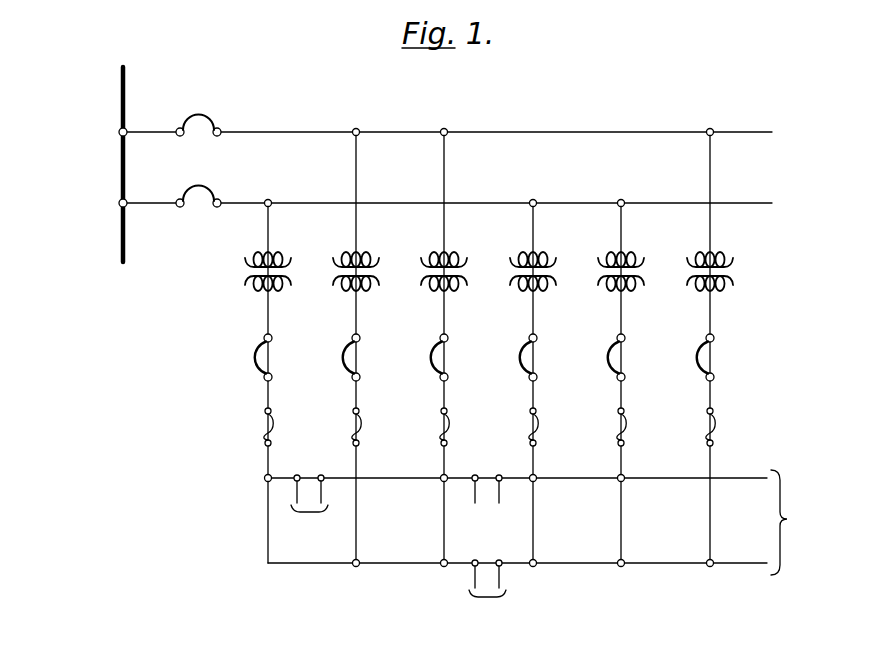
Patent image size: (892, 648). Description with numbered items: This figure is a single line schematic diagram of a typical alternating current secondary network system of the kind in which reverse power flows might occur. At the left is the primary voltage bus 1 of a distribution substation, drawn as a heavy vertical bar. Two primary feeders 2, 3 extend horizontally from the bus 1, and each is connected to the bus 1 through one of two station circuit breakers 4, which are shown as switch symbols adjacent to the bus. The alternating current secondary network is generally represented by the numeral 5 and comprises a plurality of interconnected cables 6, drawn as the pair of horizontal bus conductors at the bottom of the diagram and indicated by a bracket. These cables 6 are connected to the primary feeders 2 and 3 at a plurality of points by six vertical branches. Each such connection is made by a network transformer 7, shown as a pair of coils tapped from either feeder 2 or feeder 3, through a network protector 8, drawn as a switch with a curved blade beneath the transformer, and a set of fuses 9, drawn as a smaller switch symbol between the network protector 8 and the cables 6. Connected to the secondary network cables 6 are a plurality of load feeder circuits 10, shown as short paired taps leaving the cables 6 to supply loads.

The primary voltage bus 1 is at (122, 167).
The primary feeder 2 is at (318, 130).
The primary feeder 3 is at (318, 201).
The station circuit breaker 4 is at (196, 150).
The alternating current secondary network 5 is at (406, 527).
The interconnected cables 6 is at (787, 519).
The network transformer 7 is at (333, 270).
The network protector 8 is at (342, 357).
The set of fuses 9 is at (352, 428).
The load feeder circuit 10 is at (310, 513).